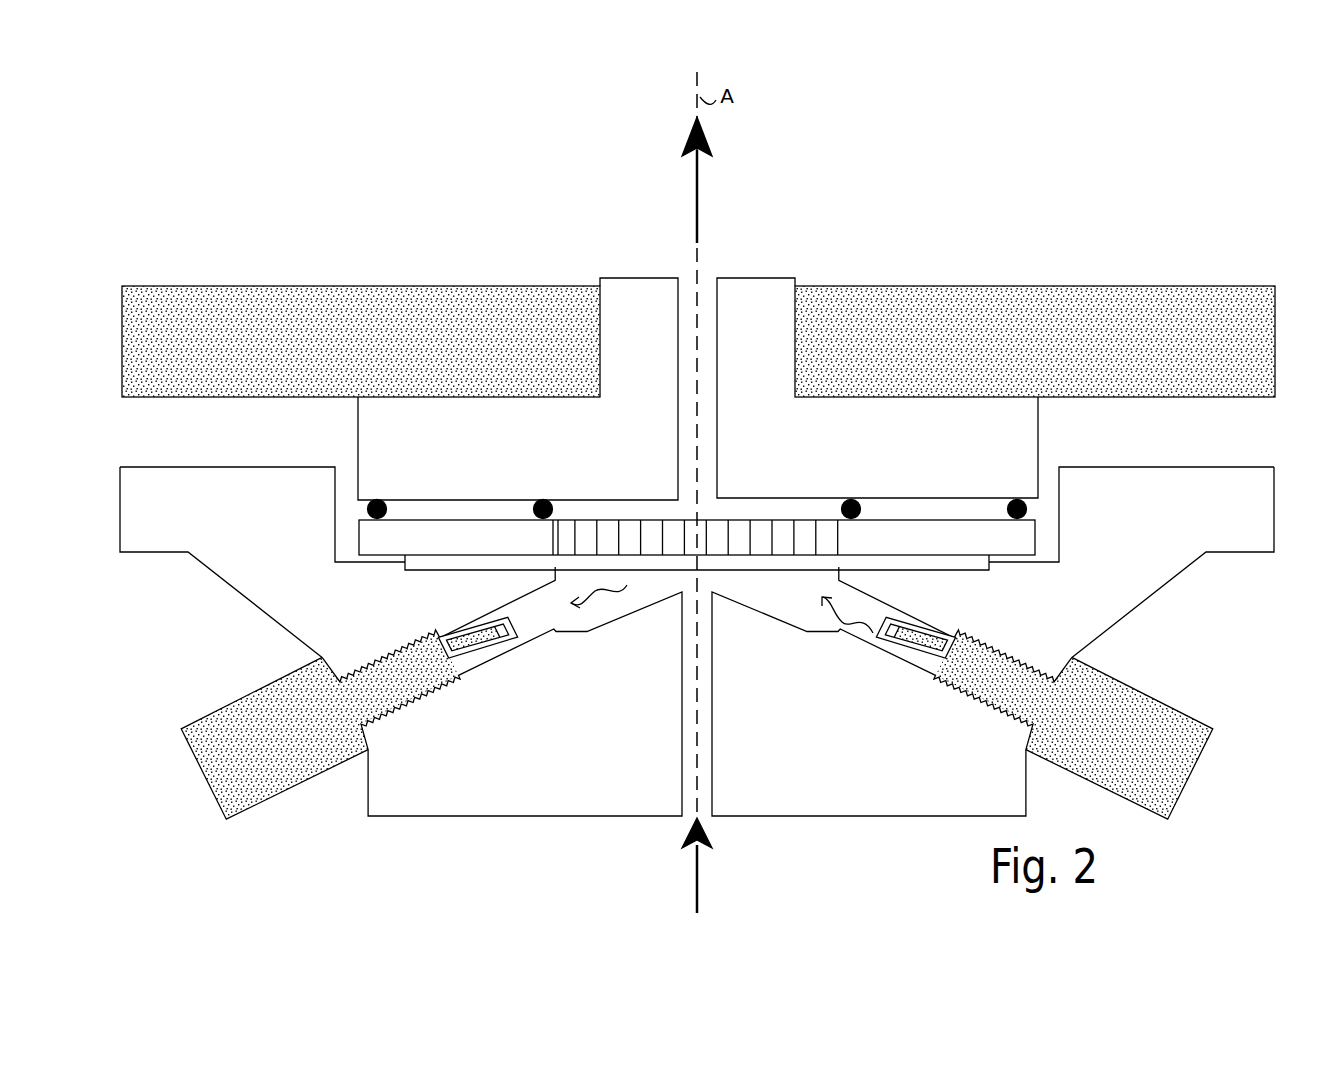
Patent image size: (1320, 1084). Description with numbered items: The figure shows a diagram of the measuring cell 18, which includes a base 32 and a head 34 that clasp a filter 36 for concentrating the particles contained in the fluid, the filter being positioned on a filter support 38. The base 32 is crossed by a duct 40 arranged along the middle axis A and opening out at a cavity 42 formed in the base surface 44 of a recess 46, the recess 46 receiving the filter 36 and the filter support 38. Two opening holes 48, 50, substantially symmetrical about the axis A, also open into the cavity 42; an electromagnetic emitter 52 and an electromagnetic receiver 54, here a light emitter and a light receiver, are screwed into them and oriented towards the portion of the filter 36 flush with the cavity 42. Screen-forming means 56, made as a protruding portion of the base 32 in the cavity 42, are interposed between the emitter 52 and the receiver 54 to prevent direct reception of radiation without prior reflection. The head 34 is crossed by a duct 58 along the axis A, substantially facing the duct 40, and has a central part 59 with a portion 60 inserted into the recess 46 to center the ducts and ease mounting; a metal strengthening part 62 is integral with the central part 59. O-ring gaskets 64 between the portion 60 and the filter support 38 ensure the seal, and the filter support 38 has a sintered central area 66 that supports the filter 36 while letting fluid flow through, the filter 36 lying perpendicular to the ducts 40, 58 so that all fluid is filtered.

The measuring cell 18 is at (342, 260).
The base 32 is at (550, 801).
The head 34 is at (567, 260).
The filter 36 is at (470, 570).
The filter support 38 is at (372, 538).
The duct 40 is at (683, 707).
The cavity 42 is at (818, 601).
The base surface 44 is at (1037, 560).
The recess 46 is at (1047, 503).
The opening hole 48 is at (857, 618).
The opening hole 50 is at (548, 625).
The electromagnetic emitter 52 is at (1167, 738).
The electromagnetic receiver 54 is at (243, 758).
The screen-forming means 56 is at (725, 622).
The duct 58 is at (704, 318).
The central part 59 is at (784, 268).
The portion 60 is at (1010, 438).
The strengthening part 62 is at (960, 300).
The O-ring gaskets 64 is at (1017, 501).
The central area 66 is at (838, 537).